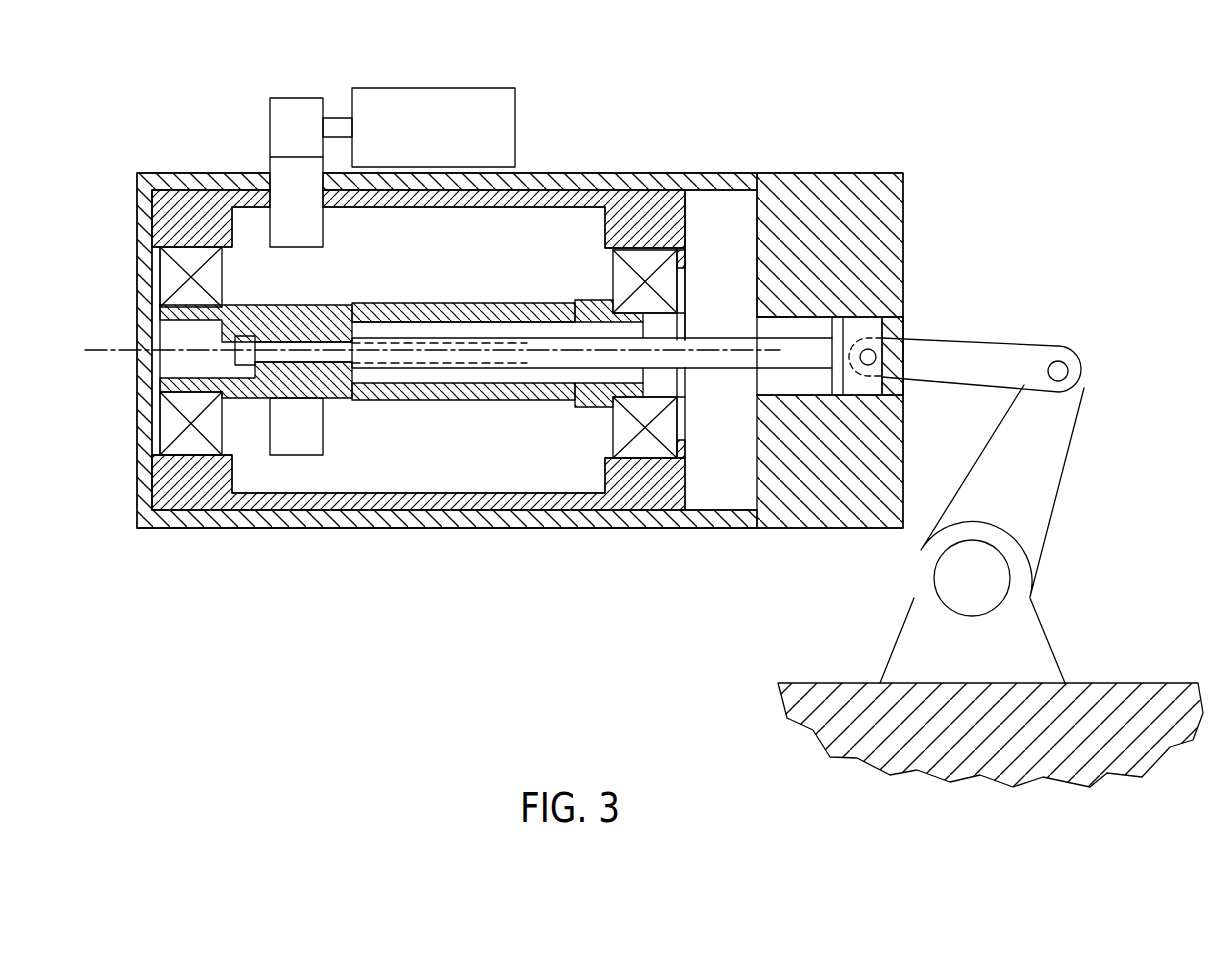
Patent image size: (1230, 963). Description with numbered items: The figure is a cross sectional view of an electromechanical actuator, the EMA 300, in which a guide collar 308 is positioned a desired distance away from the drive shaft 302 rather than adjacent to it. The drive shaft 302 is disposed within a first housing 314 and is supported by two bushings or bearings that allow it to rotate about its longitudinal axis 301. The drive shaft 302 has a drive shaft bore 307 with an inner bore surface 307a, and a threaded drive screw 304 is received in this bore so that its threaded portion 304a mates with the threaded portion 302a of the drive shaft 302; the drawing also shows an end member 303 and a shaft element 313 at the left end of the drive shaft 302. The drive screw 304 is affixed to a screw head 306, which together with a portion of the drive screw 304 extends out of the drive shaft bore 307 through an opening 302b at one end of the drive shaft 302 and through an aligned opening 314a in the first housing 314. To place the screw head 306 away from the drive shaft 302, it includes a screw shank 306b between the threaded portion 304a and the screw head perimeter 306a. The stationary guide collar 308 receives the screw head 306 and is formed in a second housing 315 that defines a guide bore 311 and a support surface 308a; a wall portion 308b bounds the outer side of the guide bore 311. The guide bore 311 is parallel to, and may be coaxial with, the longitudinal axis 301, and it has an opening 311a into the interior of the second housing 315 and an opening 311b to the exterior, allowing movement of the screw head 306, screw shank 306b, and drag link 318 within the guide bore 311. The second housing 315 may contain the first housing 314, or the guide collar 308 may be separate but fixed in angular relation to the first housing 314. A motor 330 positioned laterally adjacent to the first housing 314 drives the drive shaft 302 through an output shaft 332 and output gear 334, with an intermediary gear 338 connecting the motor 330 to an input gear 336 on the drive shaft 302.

The EMA 300 is at (205, 643).
The longitudinal axis 301 is at (110, 348).
The drive shaft 302 is at (465, 401).
The threaded portion of the drive shaft 302a is at (323, 362).
The opening 302b is at (610, 374).
The rotor end block 303 is at (283, 332).
The threaded drive screw 304 is at (440, 334).
The threaded portion of the drive screw 304a is at (383, 363).
The screw head 306 is at (850, 392).
The screw head perimeter 306a is at (856, 315).
The screw shank 306b is at (727, 340).
The drive shaft bore 307 is at (637, 378).
The inner bore surface 307a is at (522, 332).
The guide collar 308 is at (893, 218).
The support surface 308a is at (802, 399).
The end block outer wall 308b is at (893, 303).
The guide bore 311 is at (810, 332).
The opening 311a is at (767, 312).
The opening 311b is at (904, 313).
The rotor shaft stub 313 is at (237, 343).
The first housing 314 is at (418, 494).
The opening 314a is at (682, 295).
The second housing 315 is at (255, 530).
The drag link 318 is at (987, 353).
The motor 330 is at (447, 88).
The output shaft 332 is at (327, 118).
The output gear 334 is at (278, 98).
The input gear 336 is at (312, 440).
The intermediary gear 338 is at (275, 167).